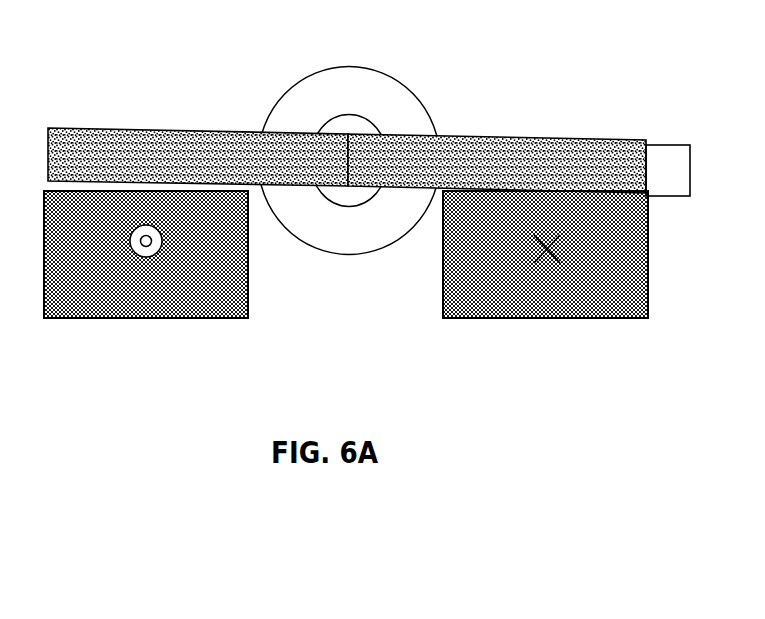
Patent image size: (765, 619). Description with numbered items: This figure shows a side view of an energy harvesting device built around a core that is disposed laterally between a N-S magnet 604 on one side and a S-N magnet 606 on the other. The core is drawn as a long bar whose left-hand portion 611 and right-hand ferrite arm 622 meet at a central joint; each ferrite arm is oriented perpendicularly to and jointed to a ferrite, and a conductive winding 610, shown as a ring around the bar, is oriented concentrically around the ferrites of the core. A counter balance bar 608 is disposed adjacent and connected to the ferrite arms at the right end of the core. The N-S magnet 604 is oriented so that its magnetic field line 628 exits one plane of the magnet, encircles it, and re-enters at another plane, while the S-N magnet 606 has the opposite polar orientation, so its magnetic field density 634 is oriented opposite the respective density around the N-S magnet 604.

The N-S magnet 604 is at (146, 283).
The S-N magnet 606 is at (552, 283).
The counter balance bar 608 is at (665, 178).
The conductive winding 610 is at (367, 82).
The first bar portion 611 is at (102, 158).
The ferrite arm 622 is at (613, 166).
The magnetic field line 628 is at (195, 297).
The magnetic field density 634 is at (608, 298).